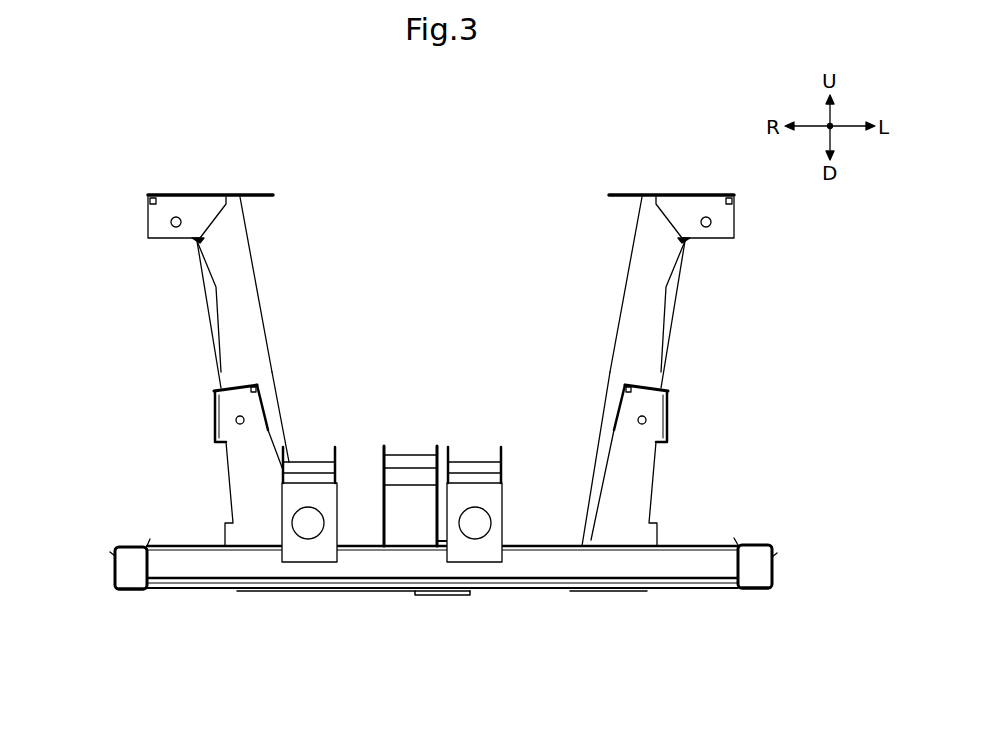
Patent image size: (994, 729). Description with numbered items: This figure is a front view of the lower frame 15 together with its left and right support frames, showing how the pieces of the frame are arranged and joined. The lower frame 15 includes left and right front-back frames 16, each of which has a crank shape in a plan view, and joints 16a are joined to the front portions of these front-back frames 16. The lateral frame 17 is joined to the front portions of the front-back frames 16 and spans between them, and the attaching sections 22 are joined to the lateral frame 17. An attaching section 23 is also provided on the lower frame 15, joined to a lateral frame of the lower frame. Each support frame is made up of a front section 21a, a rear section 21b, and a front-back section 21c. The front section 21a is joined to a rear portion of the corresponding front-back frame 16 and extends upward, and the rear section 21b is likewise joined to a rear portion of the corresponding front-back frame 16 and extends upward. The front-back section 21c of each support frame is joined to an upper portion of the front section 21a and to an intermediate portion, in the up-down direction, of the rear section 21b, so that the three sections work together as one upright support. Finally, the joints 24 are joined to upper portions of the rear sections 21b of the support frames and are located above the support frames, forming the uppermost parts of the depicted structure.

The lower frame 15 is at (445, 318).
The front-back frames 16 is at (131, 546).
The joints 16a is at (128, 592).
The lateral frame 17 is at (532, 562).
The front section 21a is at (247, 470).
The rear section 21b is at (237, 307).
The front-back section 21c is at (237, 388).
The attaching sections 22 is at (495, 498).
The attaching section 23 is at (407, 498).
The joints 24 is at (191, 194).